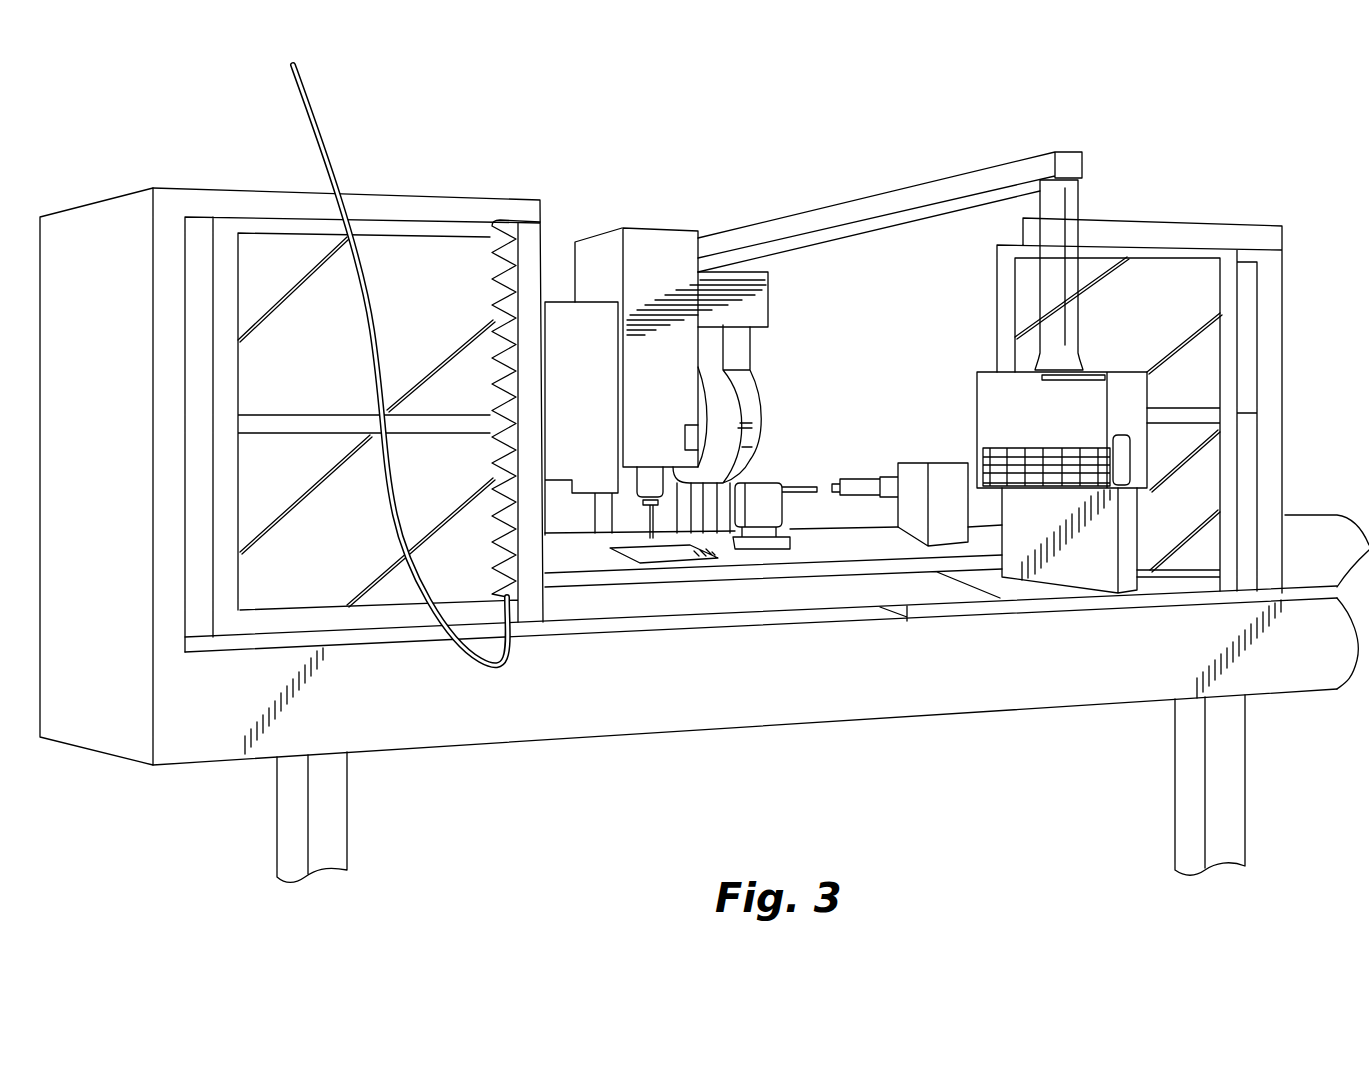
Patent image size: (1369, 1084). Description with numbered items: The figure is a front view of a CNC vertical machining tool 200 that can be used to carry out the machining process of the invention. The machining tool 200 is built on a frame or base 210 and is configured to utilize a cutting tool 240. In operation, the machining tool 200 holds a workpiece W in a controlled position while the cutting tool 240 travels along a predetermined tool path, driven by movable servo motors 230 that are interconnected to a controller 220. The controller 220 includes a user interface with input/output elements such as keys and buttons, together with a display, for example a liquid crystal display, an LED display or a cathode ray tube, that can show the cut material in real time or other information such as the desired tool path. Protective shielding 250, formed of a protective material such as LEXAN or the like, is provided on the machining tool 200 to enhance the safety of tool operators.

The CNC vertical machining tool 200 is at (823, 186).
The frame or base 210 is at (744, 731).
The controller 220 is at (978, 433).
The movable servo motors 230 is at (686, 384).
The cutting tool 240 is at (647, 522).
The protective shielding 250 is at (428, 262).
The workpiece W is at (668, 556).